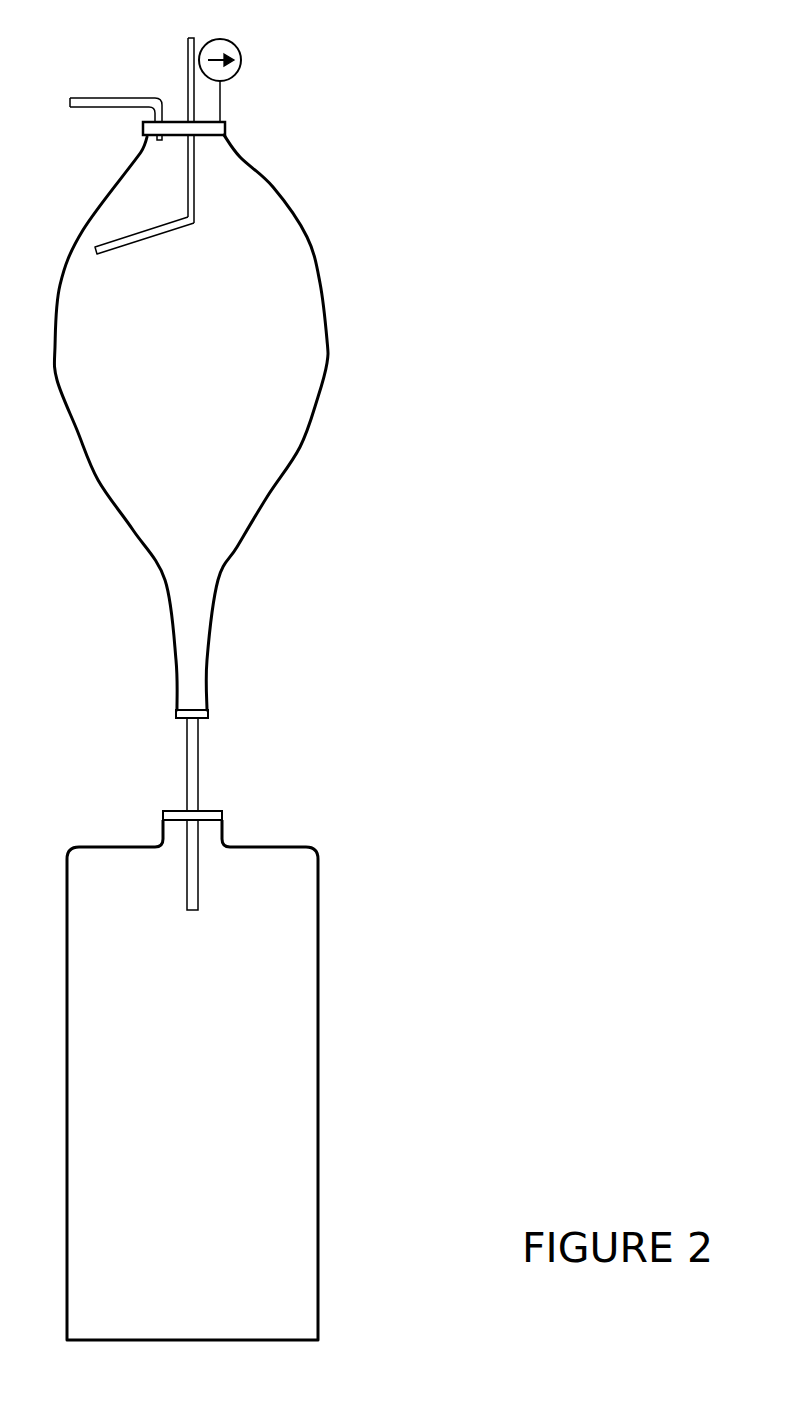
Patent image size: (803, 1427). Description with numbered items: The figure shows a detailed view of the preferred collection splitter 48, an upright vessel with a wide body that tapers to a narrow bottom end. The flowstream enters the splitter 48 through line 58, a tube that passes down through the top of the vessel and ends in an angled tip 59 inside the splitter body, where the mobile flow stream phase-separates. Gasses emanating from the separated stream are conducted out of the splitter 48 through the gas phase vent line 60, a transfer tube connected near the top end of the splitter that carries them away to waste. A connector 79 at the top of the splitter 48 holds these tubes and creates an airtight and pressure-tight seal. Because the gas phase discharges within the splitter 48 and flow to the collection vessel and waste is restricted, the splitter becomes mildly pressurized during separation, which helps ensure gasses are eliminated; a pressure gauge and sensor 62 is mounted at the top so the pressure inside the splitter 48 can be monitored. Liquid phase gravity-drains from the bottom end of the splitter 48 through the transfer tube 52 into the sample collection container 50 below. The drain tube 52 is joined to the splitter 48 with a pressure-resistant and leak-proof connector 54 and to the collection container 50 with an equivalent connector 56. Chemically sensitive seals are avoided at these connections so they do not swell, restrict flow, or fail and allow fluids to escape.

The splitter 48 is at (327, 310).
The sample collection container 50 is at (318, 1035).
The transfer tube 52 is at (200, 737).
The connector 54 is at (175, 714).
The connector 56 is at (224, 815).
The line 58 is at (187, 46).
The angled tube end 59 is at (142, 243).
The gas phase vent line 60 is at (115, 98).
The pressure gauge and sensor 62 is at (242, 50).
The connector 79 is at (226, 128).